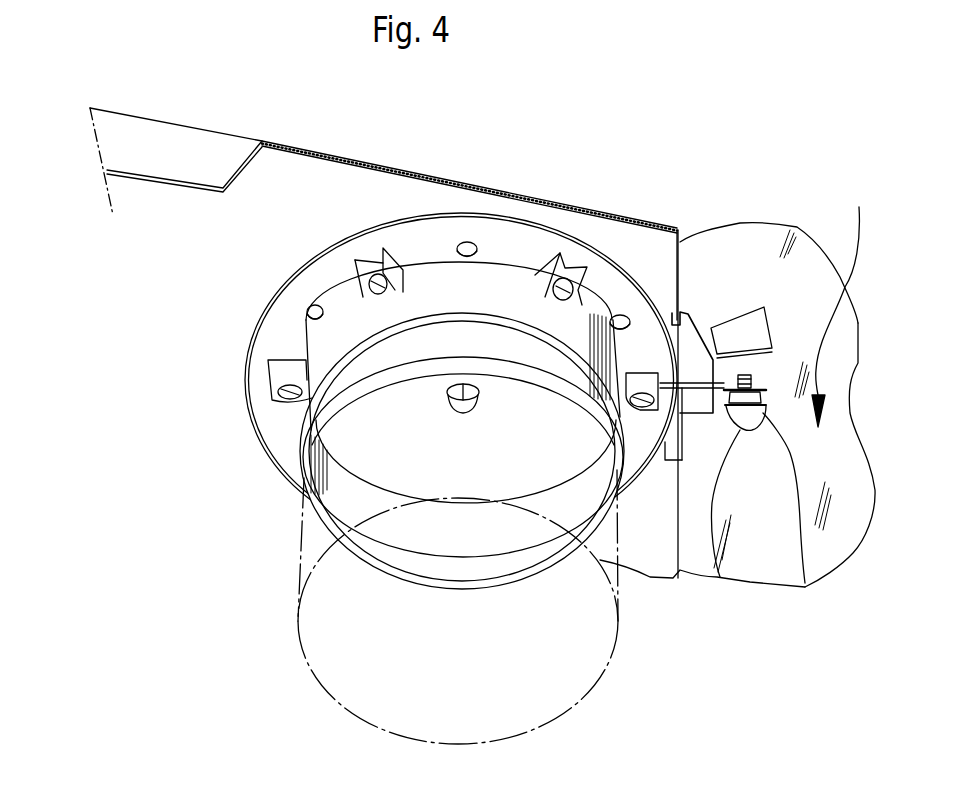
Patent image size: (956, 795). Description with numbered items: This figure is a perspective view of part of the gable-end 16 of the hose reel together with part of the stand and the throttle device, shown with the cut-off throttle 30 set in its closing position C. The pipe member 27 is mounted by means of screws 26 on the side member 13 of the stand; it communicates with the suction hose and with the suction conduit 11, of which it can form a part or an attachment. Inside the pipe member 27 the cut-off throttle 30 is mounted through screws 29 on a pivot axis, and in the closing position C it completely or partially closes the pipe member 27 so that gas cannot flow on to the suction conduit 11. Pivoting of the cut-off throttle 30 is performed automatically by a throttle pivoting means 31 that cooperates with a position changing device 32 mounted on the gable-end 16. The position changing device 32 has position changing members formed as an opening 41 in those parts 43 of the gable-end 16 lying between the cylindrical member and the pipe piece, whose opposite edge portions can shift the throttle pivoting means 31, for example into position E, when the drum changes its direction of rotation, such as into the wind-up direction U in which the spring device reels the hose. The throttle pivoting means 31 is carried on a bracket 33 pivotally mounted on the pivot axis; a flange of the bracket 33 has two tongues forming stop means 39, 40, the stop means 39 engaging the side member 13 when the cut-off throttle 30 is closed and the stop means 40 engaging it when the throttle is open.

The side member 13 is at (318, 194).
The pipe member 27 is at (345, 338).
The screws 26 is at (287, 398).
The cut-off throttle 30 is at (345, 442).
The closing position C is at (372, 495).
The suction conduit 11 is at (300, 650).
The stop means 39 is at (673, 312).
The bracket 33 is at (702, 300).
The opening 41 is at (741, 374).
The position changing device 32 is at (779, 303).
The throttle pivoting means 31 is at (778, 372).
The wind-up direction U is at (840, 303).
The stop means 40 is at (640, 465).
The screws 29 is at (720, 577).
The parts of the gable-end 43 is at (753, 563).
The position E is at (805, 583).
The gable-end 16 is at (840, 546).